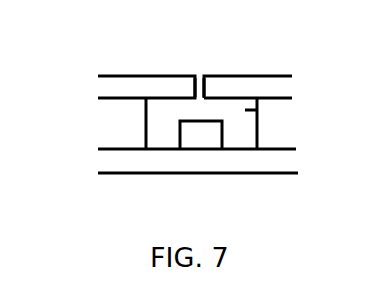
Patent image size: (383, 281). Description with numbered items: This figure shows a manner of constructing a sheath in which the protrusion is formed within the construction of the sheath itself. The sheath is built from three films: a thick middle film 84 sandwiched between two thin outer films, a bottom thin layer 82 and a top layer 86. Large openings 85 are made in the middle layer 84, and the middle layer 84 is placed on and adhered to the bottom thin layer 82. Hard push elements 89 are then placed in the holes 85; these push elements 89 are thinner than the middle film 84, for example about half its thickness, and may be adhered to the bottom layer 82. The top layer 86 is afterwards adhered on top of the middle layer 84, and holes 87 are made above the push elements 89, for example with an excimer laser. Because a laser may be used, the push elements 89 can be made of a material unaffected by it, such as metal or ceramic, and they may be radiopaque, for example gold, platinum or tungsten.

The bottom thin layer 82 is at (107, 162).
The thick middle film 84 is at (110, 118).
The large openings 85 is at (247, 110).
The top layer 86 is at (110, 87).
The holes 87 is at (200, 67).
The push elements 89 is at (215, 135).